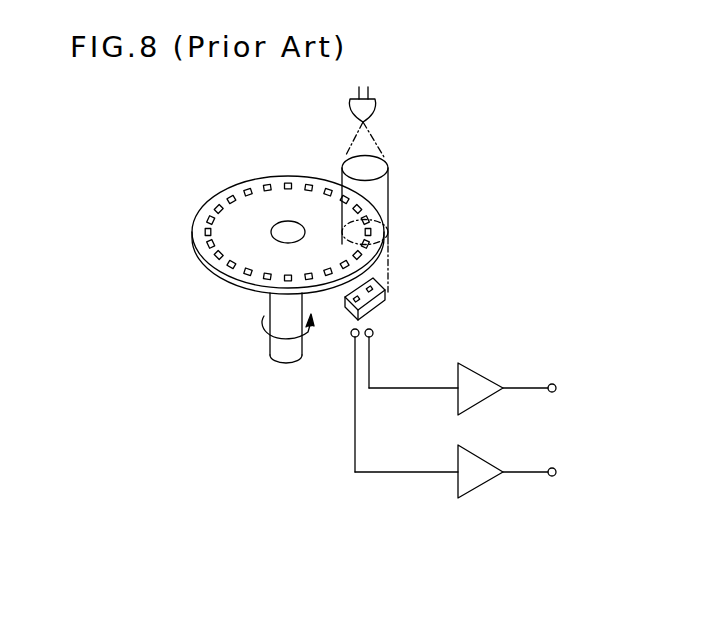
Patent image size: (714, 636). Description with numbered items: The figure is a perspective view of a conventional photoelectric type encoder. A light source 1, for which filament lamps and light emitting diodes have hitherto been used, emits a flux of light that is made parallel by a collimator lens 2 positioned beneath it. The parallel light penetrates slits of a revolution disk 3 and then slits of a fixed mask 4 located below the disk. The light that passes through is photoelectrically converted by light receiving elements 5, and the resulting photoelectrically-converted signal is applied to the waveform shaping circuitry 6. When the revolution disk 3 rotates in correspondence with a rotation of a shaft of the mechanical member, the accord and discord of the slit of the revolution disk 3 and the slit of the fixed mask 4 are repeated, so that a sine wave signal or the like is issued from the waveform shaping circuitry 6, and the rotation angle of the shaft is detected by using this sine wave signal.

The light source 1 is at (376, 105).
The collimator lens 2 is at (372, 175).
The revolution disk 3 is at (235, 186).
The fixed mask 4 is at (386, 293).
The light receiving elements 5 is at (373, 335).
The waveform shaping circuitry 6 is at (483, 392).